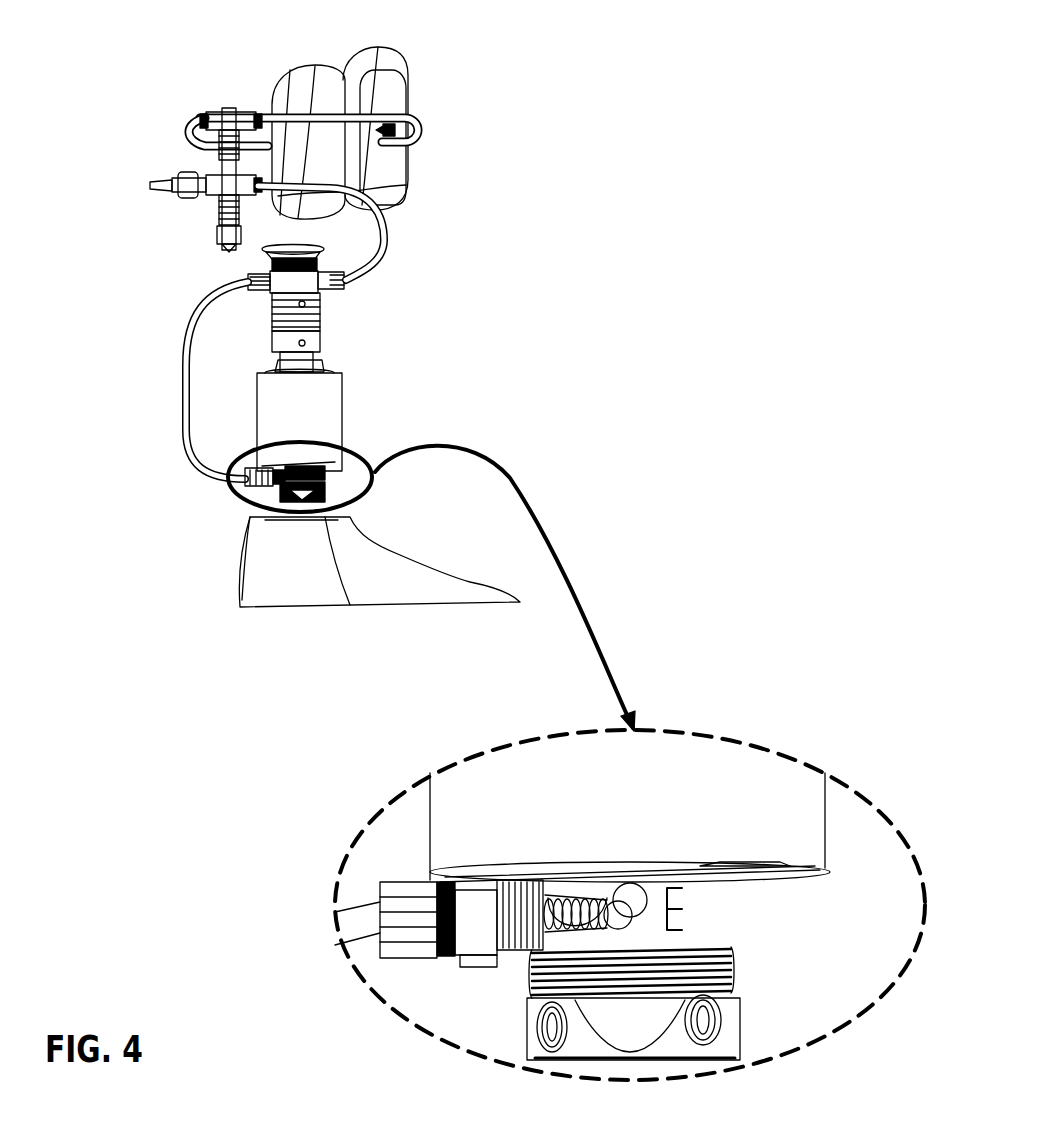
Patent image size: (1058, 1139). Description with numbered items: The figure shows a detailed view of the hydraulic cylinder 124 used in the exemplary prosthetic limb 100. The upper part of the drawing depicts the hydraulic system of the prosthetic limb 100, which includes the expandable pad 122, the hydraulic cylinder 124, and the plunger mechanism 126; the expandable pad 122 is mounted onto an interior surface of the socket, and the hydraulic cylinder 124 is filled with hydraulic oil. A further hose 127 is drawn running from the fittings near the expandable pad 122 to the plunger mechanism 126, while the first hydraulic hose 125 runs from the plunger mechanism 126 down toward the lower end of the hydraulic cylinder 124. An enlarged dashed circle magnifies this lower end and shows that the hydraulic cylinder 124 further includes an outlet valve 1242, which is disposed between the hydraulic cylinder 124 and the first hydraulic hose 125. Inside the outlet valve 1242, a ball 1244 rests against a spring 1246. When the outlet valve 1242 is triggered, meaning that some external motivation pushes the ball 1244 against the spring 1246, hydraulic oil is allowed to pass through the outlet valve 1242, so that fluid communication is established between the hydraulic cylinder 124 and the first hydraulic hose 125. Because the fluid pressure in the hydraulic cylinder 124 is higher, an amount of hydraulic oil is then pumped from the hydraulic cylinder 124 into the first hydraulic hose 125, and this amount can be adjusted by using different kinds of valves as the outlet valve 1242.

The prosthetic limb 100 is at (80, 32).
The expandable pad 122 is at (378, 48).
The hydraulic cylinder 124 is at (342, 395).
The first hydraulic hose 125 is at (183, 378).
The plunger mechanism 126 is at (258, 262).
The tube 127 is at (388, 247).
The outlet valve 1242 is at (696, 912).
The ball 1244 is at (628, 927).
The spring 1246 is at (572, 930).